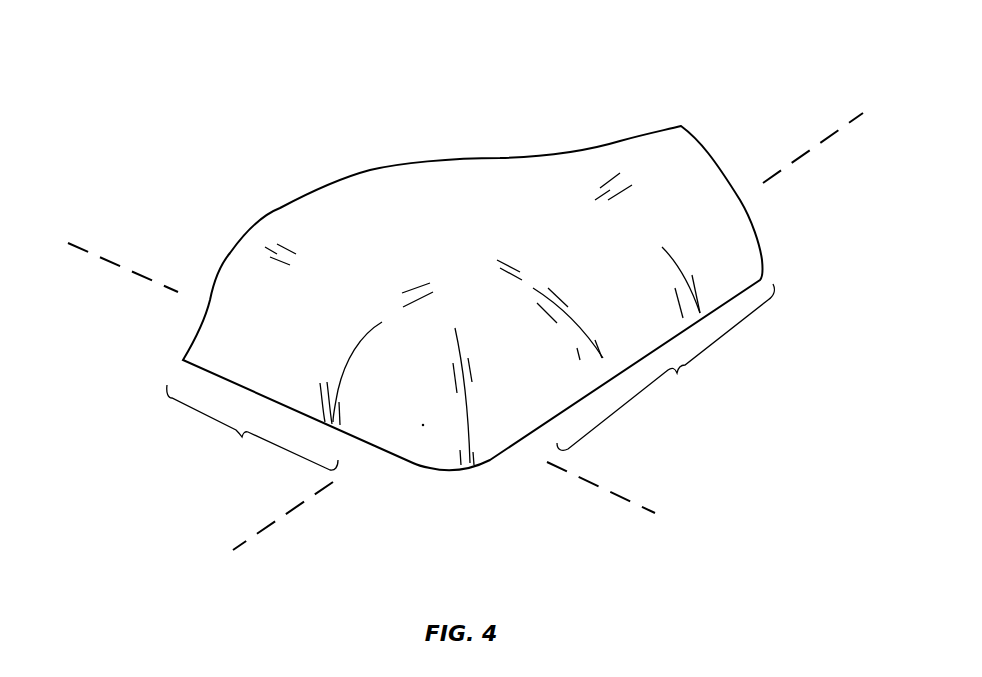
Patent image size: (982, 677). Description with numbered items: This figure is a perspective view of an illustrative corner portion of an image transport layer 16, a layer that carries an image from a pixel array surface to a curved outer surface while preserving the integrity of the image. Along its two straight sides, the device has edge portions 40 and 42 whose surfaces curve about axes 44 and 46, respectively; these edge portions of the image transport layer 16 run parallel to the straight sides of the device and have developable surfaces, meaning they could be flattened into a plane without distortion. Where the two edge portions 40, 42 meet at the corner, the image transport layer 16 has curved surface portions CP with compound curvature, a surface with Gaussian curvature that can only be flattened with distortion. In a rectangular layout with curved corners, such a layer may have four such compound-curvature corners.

The image transport layer 16 is at (568, 76).
The edge portion 40 is at (252, 427).
The edge portion 42 is at (665, 367).
The axis 44 is at (85, 253).
The axis 46 is at (853, 121).
The curved surface portion CP is at (423, 425).